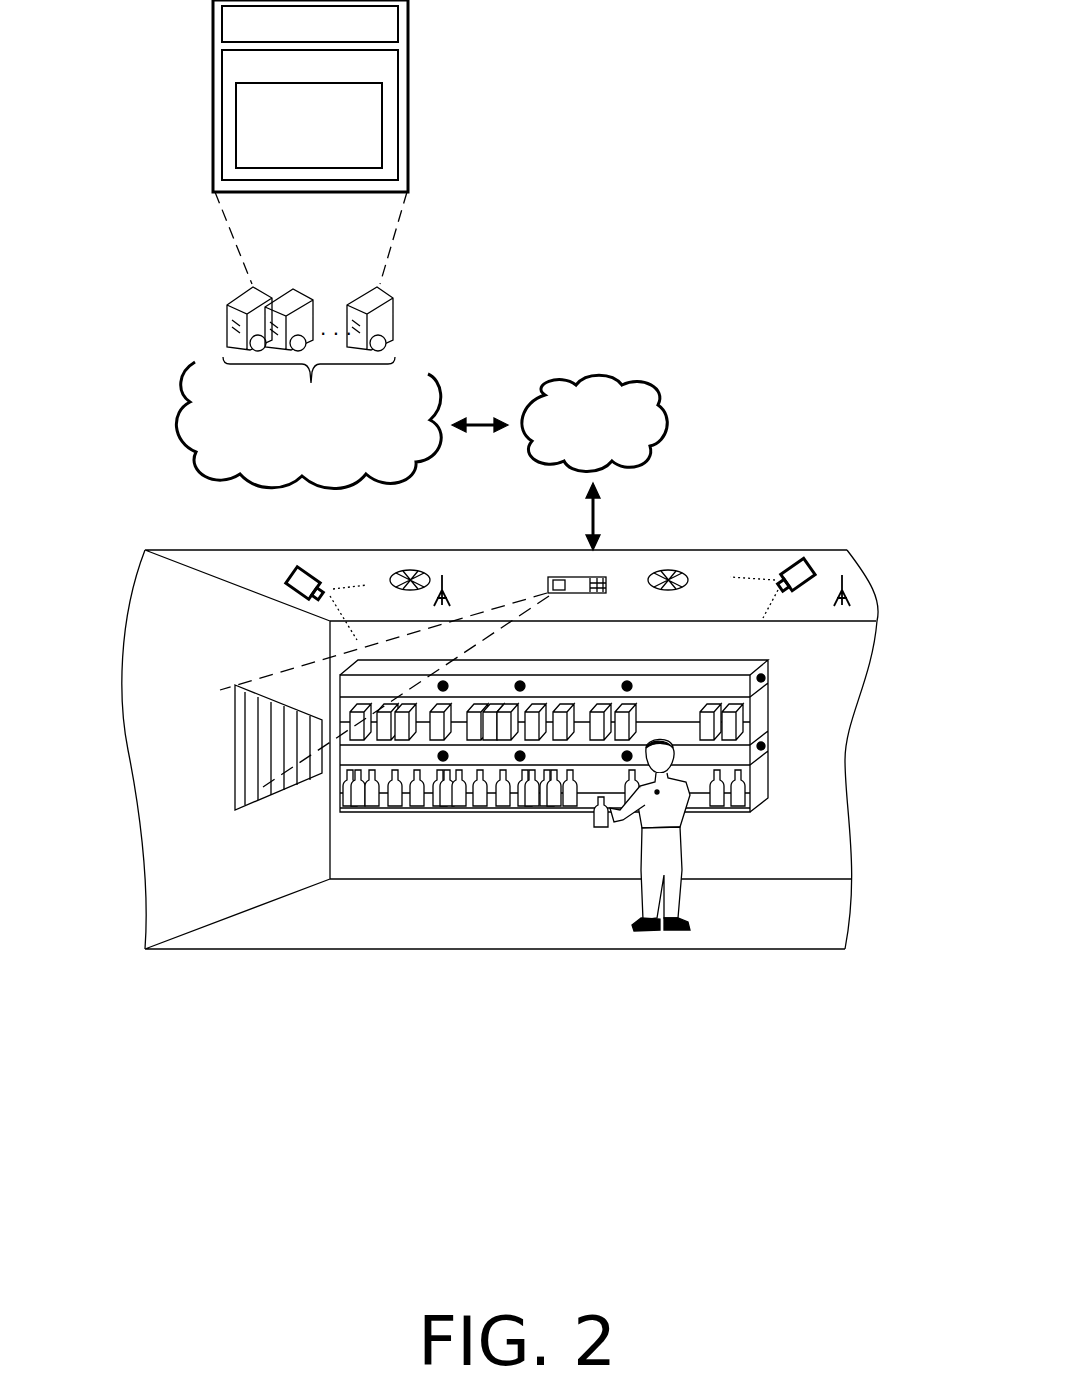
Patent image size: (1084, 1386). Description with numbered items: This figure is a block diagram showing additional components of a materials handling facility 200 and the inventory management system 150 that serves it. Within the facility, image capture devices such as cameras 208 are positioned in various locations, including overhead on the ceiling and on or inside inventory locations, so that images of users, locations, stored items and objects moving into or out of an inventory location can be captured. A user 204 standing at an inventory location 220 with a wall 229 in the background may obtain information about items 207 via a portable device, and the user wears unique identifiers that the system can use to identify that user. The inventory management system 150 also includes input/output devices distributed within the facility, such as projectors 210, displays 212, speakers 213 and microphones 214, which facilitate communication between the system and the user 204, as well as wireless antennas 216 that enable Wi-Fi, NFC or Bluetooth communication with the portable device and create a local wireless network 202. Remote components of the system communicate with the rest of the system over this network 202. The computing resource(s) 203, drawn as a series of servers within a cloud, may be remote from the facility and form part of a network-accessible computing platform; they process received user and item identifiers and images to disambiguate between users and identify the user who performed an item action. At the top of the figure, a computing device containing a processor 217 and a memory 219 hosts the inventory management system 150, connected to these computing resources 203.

The processor 217 is at (310, 24).
The memory 219 is at (310, 115).
The inventory management system 150 is at (309, 125).
The computing resource(s) 203 is at (308, 425).
The network 202 is at (594, 423).
The materials handling facility 200 is at (848, 550).
The wall 229 is at (190, 887).
The inventory location / shelf 220 is at (478, 813).
The display 212 is at (543, 721).
The camera 208 is at (305, 568).
The projector 210 is at (575, 577).
The microphone 214 is at (395, 573).
The speaker 213 is at (668, 568).
The wireless antenna 216 is at (440, 573).
The user 204 is at (683, 835).
The item 207 is at (593, 830).